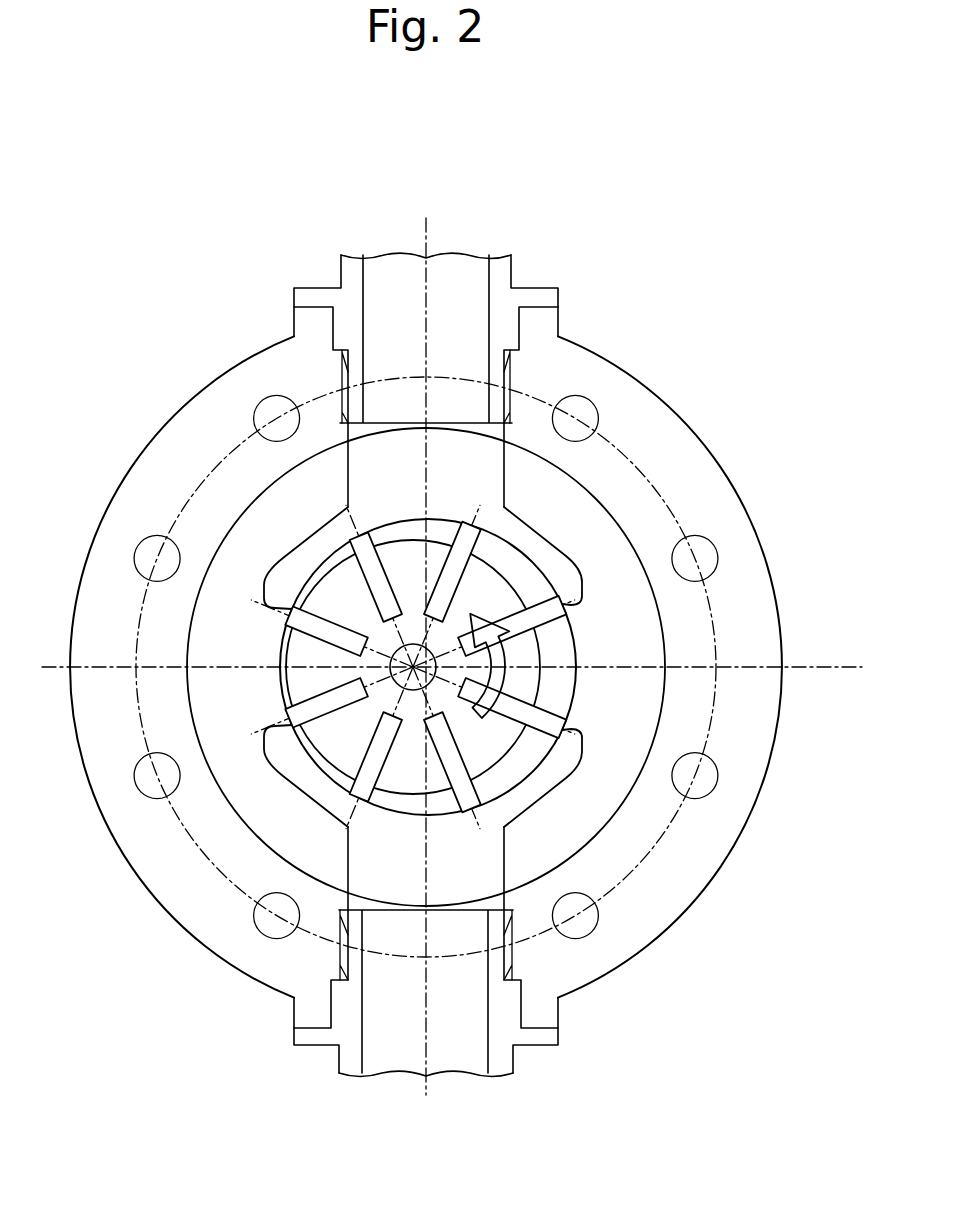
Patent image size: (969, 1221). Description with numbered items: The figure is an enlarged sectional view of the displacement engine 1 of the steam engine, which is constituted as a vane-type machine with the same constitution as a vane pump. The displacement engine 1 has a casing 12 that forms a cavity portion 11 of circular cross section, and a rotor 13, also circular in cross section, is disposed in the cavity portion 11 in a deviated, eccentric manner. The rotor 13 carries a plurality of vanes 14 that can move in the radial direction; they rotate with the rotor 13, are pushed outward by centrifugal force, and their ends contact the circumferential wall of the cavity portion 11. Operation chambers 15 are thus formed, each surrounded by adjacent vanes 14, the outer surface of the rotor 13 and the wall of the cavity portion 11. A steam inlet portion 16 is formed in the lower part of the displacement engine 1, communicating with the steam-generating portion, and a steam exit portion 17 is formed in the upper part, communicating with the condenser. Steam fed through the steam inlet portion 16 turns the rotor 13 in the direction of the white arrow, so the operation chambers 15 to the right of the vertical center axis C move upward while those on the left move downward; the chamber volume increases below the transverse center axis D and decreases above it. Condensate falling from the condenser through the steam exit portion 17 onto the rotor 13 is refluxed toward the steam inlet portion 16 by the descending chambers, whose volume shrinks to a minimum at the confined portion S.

The displacement engine 1 is at (704, 416).
The cavity portion 11 is at (532, 567).
The casing 12 is at (640, 643).
The rotor 13 is at (332, 592).
The vanes 14 is at (392, 810).
The operation chambers 15 is at (557, 697).
The steam inlet portion 16 is at (503, 840).
The steam exit portion 17 is at (505, 488).
The confined portion S is at (283, 632).
The vertical center axis C is at (426, 639).
The transverse center axis D is at (437, 668).